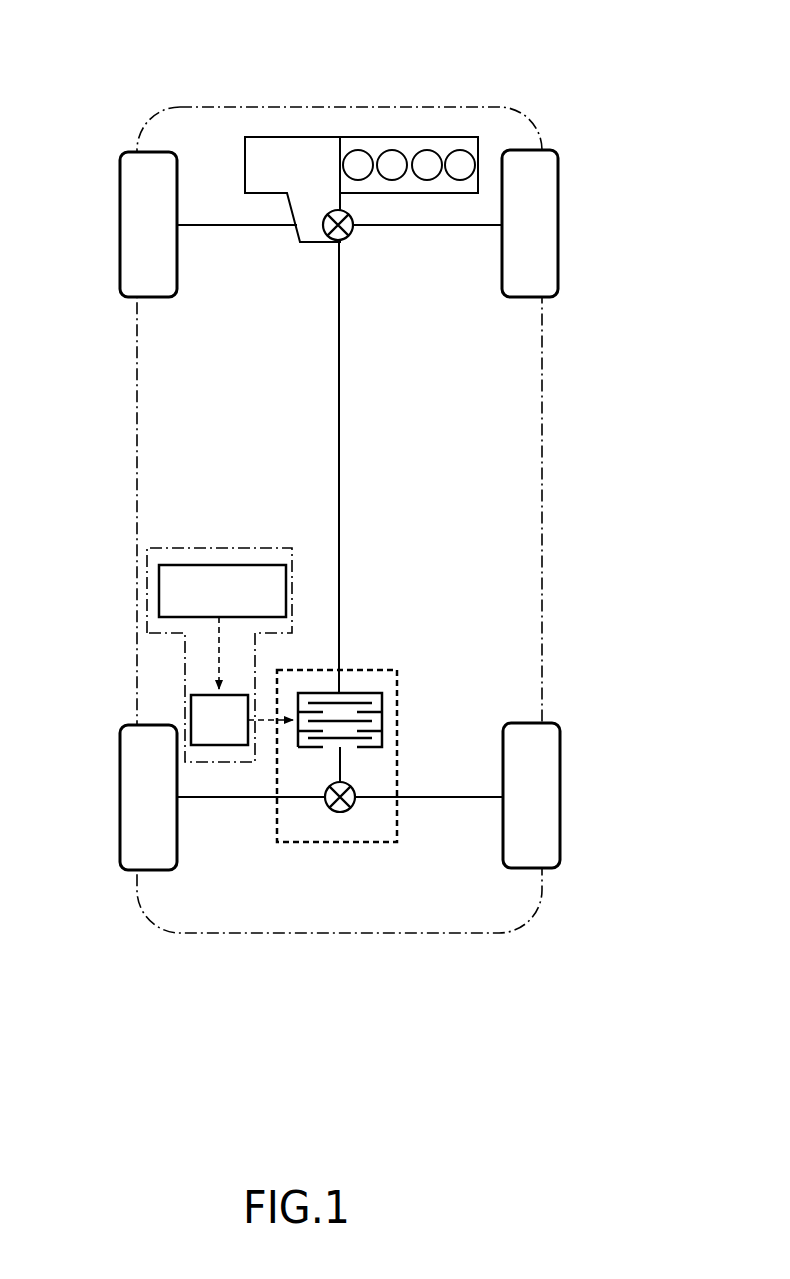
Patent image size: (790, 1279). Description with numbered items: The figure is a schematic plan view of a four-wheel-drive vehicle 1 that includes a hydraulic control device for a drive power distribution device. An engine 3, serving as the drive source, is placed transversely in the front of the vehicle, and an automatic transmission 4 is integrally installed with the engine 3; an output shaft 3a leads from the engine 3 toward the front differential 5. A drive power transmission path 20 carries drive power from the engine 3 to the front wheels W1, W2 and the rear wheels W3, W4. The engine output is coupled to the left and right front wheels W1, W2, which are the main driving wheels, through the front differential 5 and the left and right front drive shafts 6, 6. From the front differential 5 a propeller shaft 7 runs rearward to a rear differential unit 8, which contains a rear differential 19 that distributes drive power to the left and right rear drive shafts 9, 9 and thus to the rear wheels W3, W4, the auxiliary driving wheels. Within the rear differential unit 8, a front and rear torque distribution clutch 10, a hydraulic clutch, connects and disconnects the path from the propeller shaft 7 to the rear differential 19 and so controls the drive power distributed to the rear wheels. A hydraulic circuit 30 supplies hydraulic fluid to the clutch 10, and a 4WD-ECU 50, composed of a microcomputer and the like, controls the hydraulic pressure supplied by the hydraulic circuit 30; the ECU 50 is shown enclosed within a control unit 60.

The four-wheel-drive vehicle 1 is at (537, 98).
The engine 3 is at (412, 137).
The engine output shaft 3a is at (342, 197).
The automatic transmission 4 is at (277, 137).
The front differential 5 is at (349, 242).
The front drive shafts 6 is at (266, 227).
The propeller shaft 7 is at (342, 525).
The rear differential unit 8 is at (376, 666).
The rear drive shafts 9 is at (266, 799).
The front and rear torque distribution clutch 10 is at (387, 717).
The rear differential 19 is at (346, 813).
The drive power transmission path 20 is at (332, 412).
The hydraulic circuit 30 is at (190, 712).
The 4WD-ECU 50 is at (262, 564).
The control unit 60 is at (188, 545).
The front wheel W1 is at (120, 199).
The front wheel W2 is at (558, 197).
The rear wheel W3 is at (120, 787).
The rear wheel W4 is at (560, 788).